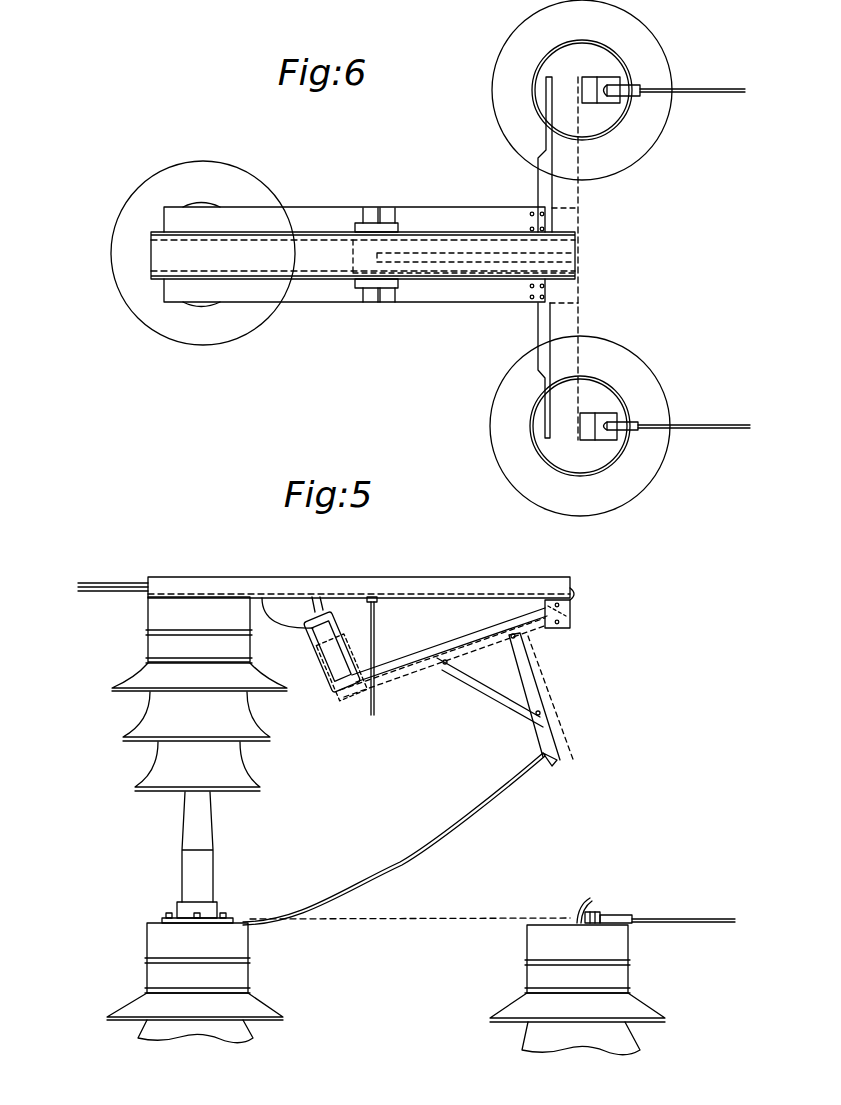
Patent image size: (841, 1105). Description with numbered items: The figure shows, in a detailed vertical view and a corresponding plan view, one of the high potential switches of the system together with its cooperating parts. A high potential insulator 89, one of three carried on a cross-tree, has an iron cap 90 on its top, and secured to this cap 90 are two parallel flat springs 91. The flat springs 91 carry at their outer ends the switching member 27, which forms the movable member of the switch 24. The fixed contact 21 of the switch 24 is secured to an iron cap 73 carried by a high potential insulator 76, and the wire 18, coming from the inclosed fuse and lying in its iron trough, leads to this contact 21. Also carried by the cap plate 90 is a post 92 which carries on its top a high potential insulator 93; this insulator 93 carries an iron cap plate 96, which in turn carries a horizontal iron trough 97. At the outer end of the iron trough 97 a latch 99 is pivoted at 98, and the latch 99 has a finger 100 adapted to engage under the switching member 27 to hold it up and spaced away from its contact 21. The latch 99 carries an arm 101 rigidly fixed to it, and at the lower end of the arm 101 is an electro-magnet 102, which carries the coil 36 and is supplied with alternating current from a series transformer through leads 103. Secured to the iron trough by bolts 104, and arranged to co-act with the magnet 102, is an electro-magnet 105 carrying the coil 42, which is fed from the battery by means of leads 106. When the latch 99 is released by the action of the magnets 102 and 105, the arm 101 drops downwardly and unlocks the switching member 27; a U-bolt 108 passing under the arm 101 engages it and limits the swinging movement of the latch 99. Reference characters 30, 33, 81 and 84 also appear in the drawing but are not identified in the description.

In FIG. 6, the wire 18 is at (708, 428).
In FIG. 5, the wire 18 is at (672, 919).
In FIG. 6, the contact 21 is at (590, 432).
In FIG. 5, the contact 21 is at (577, 912).
In FIG. 6, the switch 24 is at (497, 327).
In FIG. 5, the switch 24 is at (512, 747).
In FIG. 6, the switching member 27 is at (546, 130).
In FIG. 5, the switching member 27 is at (546, 768).
In FIG. 6, the terminal bracket 30 is at (592, 82).
In FIG. 6, the conductor rod 33 is at (706, 89).
In FIG. 5, the coil 36 is at (340, 676).
In FIG. 5, the coil 42 is at (318, 656).
In FIG. 6, the iron cap 73 is at (610, 405).
In FIG. 5, the iron cap 73 is at (612, 943).
In FIG. 6, the high potential insulator 76 is at (620, 367).
In FIG. 5, the high potential insulator 76 is at (625, 1008).
In FIG. 6, the insulator cap 81 is at (608, 115).
In FIG. 6, the insulator shed 84 is at (632, 170).
In FIG. 5, the high potential insulator 89 is at (135, 1008).
In FIG. 5, the iron cap 90 is at (160, 940).
In FIG. 6, the flat spring 91 is at (335, 207).
In FIG. 5, the flat spring 91 is at (377, 870).
In FIG. 5, the post 92 is at (193, 828).
In FIG. 6, the high potential insulator 93 is at (122, 310).
In FIG. 5, the high potential insulator 93 is at (165, 708).
In FIG. 6, the iron cap plate 96 is at (205, 204).
In FIG. 5, the iron cap plate 96 is at (160, 612).
In FIG. 6, the iron trough 97 is at (427, 237).
In FIG. 5, the iron trough 97 is at (302, 585).
In FIG. 5, the pivot 98 is at (560, 622).
In FIG. 5, the latch 99 is at (545, 728).
In FIG. 5, the finger 100 is at (557, 760).
In FIG. 5, the arm 101 is at (390, 673).
In FIG. 5, the electro-magnet 102 is at (320, 675).
In FIG. 5, the leads 103 is at (112, 582).
In FIG. 5, the bolt 104 is at (330, 600).
In FIG. 5, the electro-magnet 105 is at (312, 625).
In FIG. 5, the leads 106 is at (95, 592).
In FIG. 5, the U-bolt 108 is at (376, 650).